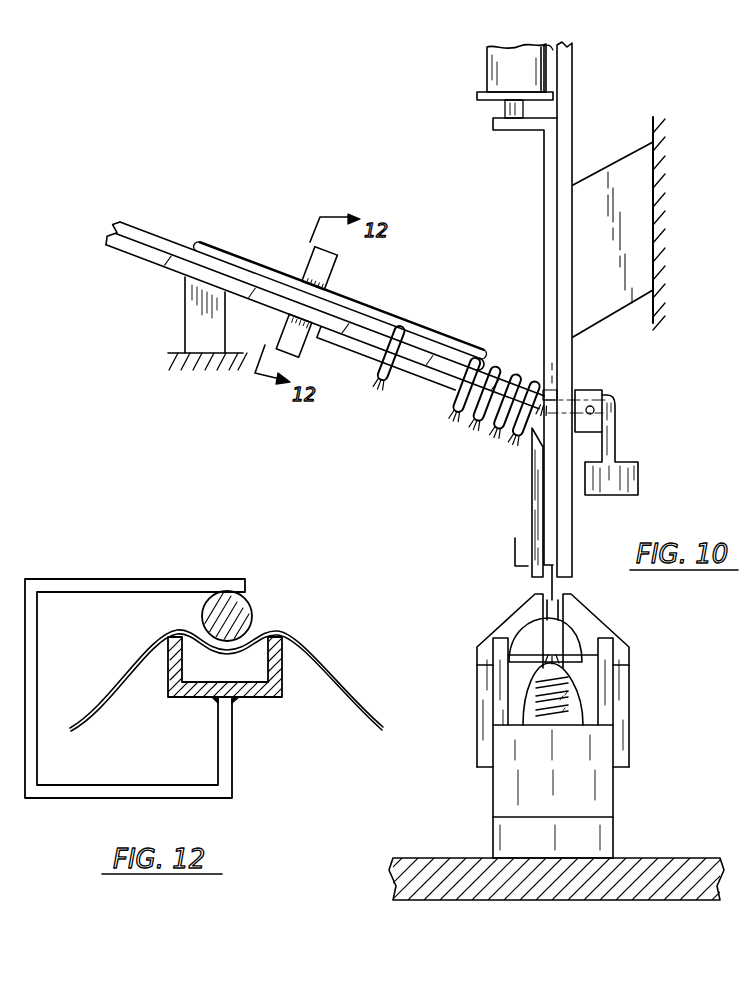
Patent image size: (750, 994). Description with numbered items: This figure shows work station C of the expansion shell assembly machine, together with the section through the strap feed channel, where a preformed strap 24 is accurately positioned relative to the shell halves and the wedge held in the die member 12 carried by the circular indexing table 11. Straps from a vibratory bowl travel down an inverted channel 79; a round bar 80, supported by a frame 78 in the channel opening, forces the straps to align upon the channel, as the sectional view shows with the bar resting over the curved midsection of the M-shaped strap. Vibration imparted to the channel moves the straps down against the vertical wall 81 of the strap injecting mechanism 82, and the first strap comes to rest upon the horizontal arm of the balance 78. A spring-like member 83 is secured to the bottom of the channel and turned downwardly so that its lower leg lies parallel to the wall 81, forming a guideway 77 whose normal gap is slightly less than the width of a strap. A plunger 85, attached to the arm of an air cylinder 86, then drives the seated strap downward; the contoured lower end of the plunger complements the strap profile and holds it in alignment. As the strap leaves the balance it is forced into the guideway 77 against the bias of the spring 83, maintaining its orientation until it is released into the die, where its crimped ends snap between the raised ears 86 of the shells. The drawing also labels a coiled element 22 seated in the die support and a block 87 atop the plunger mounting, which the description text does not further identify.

In FIG. 10, the circular indexing table 11 is at (515, 313).
In FIG. 10, the die member 12 is at (624, 807).
In FIG. 10, the coil spring dome 22 is at (582, 703).
In FIG. 10, the preformed strap 24 is at (422, 337).
In FIG. 12, the preformed strap 24 is at (323, 686).
In FIG. 12, the guideway 77 is at (197, 578).
In FIG. 10, the frame 78 is at (642, 465).
In FIG. 10, the inverted channel 79 is at (325, 313).
In FIG. 12, the inverted channel 79 is at (258, 700).
In FIG. 10, the round bar 80 is at (393, 318).
In FIG. 12, the round bar 80 is at (250, 608).
In FIG. 10, the vertical wall 81 is at (572, 125).
In FIG. 10, the strap injecting mechanism 82 is at (602, 354).
In FIG. 10, the spring-like member 83 is at (532, 530).
In FIG. 10, the plunger 85 is at (544, 245).
In FIG. 10, the air cylinder 86 is at (540, 626).
In FIG. 10, the counterweight block 87 is at (503, 70).